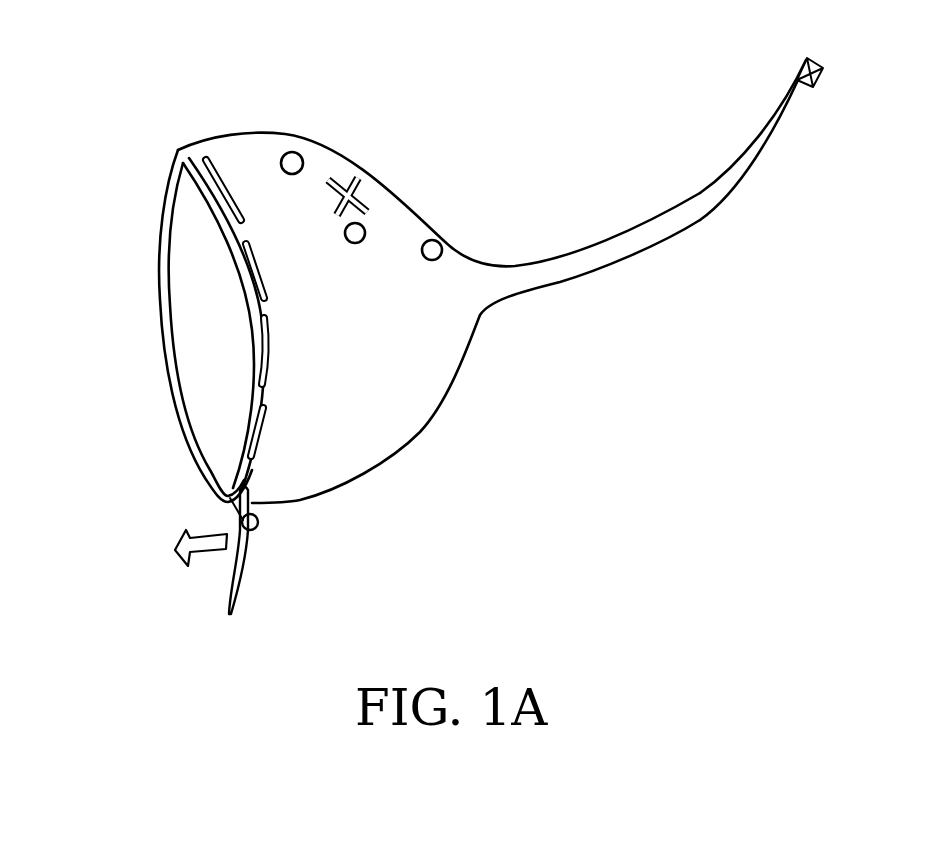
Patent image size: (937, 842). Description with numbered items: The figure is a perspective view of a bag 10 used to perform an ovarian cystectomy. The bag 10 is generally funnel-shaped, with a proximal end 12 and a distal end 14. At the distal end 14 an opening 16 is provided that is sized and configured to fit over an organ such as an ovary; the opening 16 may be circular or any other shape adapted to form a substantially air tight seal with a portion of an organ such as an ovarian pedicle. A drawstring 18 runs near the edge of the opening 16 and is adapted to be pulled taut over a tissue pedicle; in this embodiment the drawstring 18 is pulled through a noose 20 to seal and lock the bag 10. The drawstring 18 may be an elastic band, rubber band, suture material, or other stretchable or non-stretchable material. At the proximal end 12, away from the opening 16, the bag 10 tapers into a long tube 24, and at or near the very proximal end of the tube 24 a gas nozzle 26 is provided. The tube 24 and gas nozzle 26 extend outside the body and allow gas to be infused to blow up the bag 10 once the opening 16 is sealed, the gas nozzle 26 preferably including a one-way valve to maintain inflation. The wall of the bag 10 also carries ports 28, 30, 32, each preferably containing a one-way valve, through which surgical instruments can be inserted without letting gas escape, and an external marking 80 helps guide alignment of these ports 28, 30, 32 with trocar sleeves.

The bag 10 is at (423, 455).
The proximal end 12 is at (814, 135).
The distal end 14 is at (221, 401).
The opening 16 is at (185, 313).
The drawstring 18 is at (243, 590).
The noose 20 is at (259, 528).
The tube 24 is at (744, 184).
The gas nozzle 26 is at (823, 65).
The port 28 is at (296, 152).
The port 30 is at (440, 242).
The port 32 is at (366, 234).
The external marking 80 is at (351, 179).